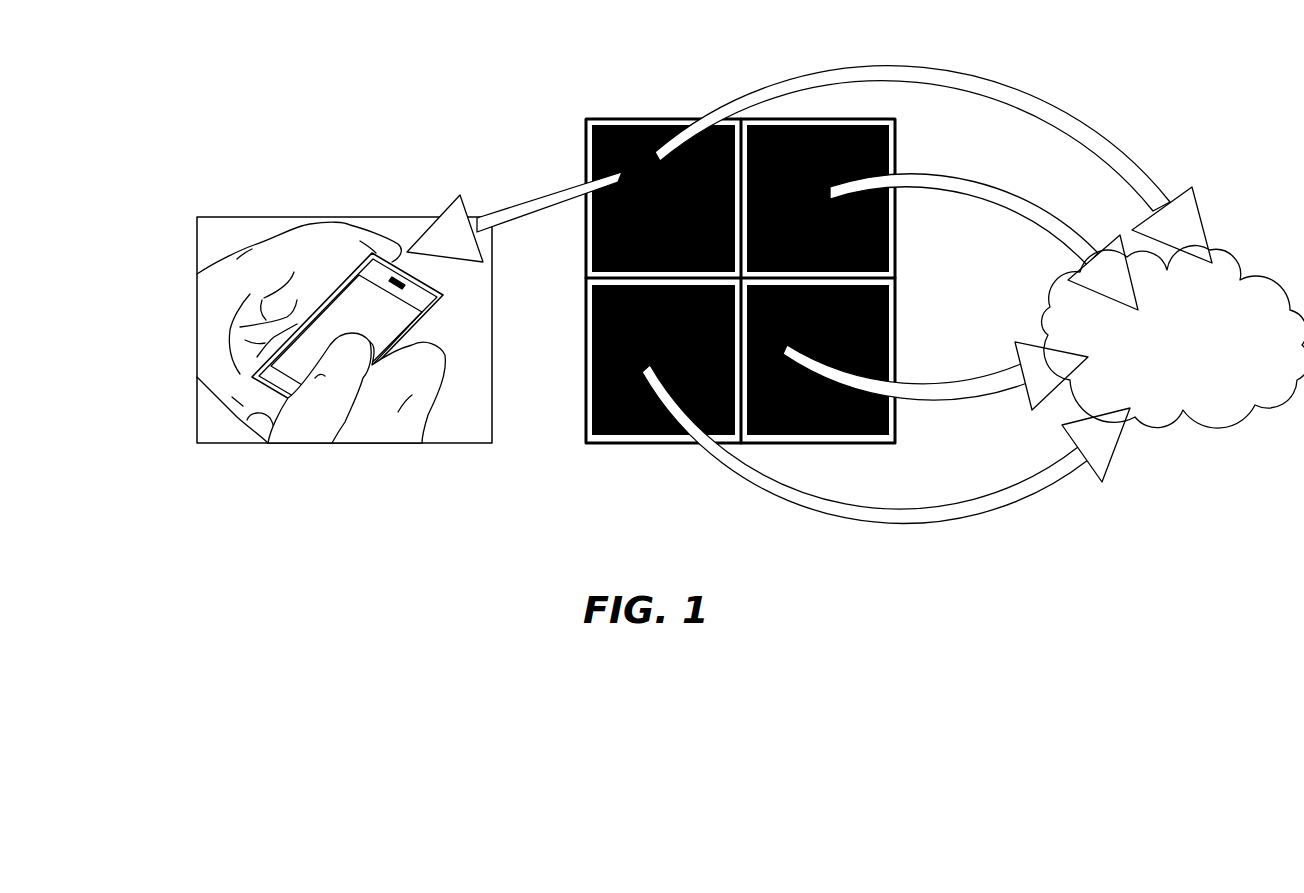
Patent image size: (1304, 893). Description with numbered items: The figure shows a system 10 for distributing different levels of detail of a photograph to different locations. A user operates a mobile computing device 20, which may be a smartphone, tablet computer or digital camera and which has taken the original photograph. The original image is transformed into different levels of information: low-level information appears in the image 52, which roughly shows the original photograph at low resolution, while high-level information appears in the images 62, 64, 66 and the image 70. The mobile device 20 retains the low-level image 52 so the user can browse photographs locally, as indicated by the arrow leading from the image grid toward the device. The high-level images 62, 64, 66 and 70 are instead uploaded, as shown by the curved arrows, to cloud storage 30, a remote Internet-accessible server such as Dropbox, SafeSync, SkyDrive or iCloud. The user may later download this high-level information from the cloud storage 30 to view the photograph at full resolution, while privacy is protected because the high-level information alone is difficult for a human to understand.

The system 10 is at (470, 92).
The mobile computing device 20 is at (373, 260).
The cloud storage 30 is at (1189, 363).
The image 52 is at (646, 142).
The image 62 is at (615, 422).
The image 64 is at (891, 428).
The image 66 is at (891, 134).
The image 70 is at (930, 70).